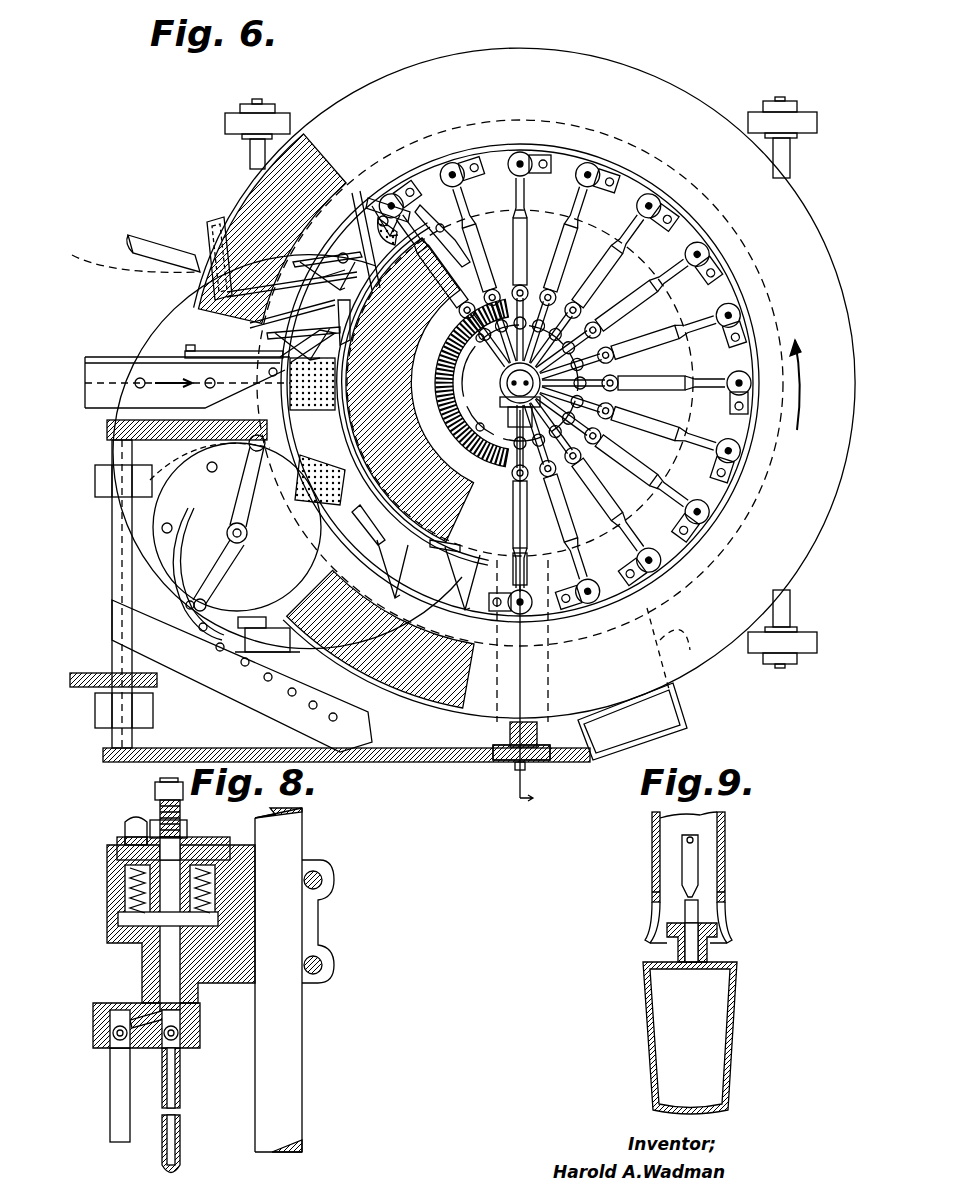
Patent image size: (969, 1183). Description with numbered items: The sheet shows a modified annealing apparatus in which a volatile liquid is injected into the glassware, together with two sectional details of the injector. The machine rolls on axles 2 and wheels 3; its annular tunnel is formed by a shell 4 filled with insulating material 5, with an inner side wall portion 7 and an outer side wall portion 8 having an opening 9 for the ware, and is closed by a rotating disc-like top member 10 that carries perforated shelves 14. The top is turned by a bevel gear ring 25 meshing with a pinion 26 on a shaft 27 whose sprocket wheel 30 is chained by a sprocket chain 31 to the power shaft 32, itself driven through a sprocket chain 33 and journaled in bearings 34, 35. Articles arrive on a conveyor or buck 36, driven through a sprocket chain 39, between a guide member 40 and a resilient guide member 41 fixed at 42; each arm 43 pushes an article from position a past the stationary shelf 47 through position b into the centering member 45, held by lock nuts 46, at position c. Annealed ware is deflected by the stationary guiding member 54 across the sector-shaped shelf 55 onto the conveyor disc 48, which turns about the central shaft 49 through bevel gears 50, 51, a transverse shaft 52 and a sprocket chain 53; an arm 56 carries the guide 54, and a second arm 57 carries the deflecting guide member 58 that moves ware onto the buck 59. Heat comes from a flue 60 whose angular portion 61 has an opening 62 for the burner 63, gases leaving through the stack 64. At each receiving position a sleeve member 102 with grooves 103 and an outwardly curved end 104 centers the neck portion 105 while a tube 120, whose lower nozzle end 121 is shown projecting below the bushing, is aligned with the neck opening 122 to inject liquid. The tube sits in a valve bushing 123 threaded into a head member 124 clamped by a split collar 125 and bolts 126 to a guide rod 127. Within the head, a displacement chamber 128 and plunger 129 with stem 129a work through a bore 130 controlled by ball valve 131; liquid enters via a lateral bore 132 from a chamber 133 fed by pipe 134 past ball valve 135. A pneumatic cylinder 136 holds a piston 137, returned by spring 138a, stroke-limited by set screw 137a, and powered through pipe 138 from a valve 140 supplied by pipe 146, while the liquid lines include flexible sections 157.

In FIG. 6, the axles 2 is at (258, 150).
In FIG. 6, the wheels 3 is at (230, 122).
In FIG. 6, the shell 4 is at (300, 135).
In FIG. 6, the insulating material 5 is at (442, 237).
In FIG. 6, the inner annular side wall portion 7 is at (76, 375).
In FIG. 6, the outer side wall portion 8 is at (618, 592).
In FIG. 6, the opening 9 is at (300, 265).
In FIG. 6, the disc-like top member 10 is at (815, 520).
In FIG. 6, the perforated shelves 14 is at (250, 215).
In FIG. 6, the bevel gear ring 25 is at (520, 383).
In FIG. 6, the beveled pinion 26 is at (514, 455).
In FIG. 6, the shaft 27 is at (527, 763).
In FIG. 6, the sprocket wheel 30 is at (540, 745).
In FIG. 6, the sprocket chain 31 is at (198, 750).
In FIG. 6, the power shaft 32 is at (112, 633).
In FIG. 6, the sprocket chain 33 is at (84, 687).
In FIG. 6, the bearing 34 is at (132, 715).
In FIG. 6, the bearing 35 is at (132, 483).
In FIG. 6, the conveyor or buck 36 is at (108, 357).
In FIG. 6, the sprocket chain 39 is at (112, 425).
In FIG. 6, the guide member 40 is at (150, 360).
In FIG. 6, the guide member 41 is at (185, 325).
In FIG. 6, the securing point 42 is at (192, 351).
In FIG. 6, the arm 43 is at (367, 235).
In FIG. 6, the centering member 45 is at (397, 195).
In FIG. 6, the lock nuts 46 is at (355, 650).
In FIG. 6, the stationary shelf 47 is at (250, 325).
In FIG. 6, the conveyor disc 48 is at (250, 650).
In FIG. 6, the central vertical shaft 49 is at (243, 545).
In FIG. 6, the beveled gear 50 is at (215, 515).
In FIG. 6, the beveled gear 51 is at (200, 500).
In FIG. 6, the transverse shaft 52 is at (195, 486).
In FIG. 6, the sprocket chain 53 is at (96, 485).
In FIG. 6, the stationary guiding member 54 is at (265, 505).
In FIG. 6, the sector-shaped stationary shelf 55 is at (312, 626).
In FIG. 6, the arm 56 is at (250, 448).
In FIG. 6, the second arm 57 is at (215, 560).
In FIG. 6, the deflecting guide member 58 is at (222, 690).
In FIG. 6, the buck or conveyor 59 is at (218, 640).
In FIG. 6, the flue 60 is at (680, 607).
In FIG. 6, the angular flue portion 61 is at (210, 225).
In FIG. 6, the opening 62 is at (136, 256).
In FIG. 6, the burner 63 is at (158, 235).
In FIG. 6, the stack 64 is at (660, 705).
In FIG. 6, the bottle position a is at (265, 368).
In FIG. 6, the article position b is at (227, 293).
In FIG. 6, the article position c is at (342, 252).
In FIG. 9, the sleeve member 102 is at (727, 820).
In FIG. 9, the grooves 103 is at (654, 902).
In FIG. 9, the outwardly curved lower end 104 is at (720, 938).
In FIG. 9, the neck portion 105 is at (655, 945).
In FIG. 8, the tube 120 is at (182, 1083).
In FIG. 9, the tube 120 is at (685, 852).
In FIG. 8, the needle tip 121 is at (178, 1173).
In FIG. 9, the needle tip 121 is at (686, 890).
In FIG. 9, the neck opening 122 is at (700, 915).
In FIG. 8, the valve bushing 123 is at (190, 1052).
In FIG. 6, the head member 124 is at (700, 535).
In FIG. 8, the head member 124 is at (198, 998).
In FIG. 8, the split collar 125 is at (318, 920).
In FIG. 8, the clamping bolts 126 is at (322, 878).
In FIG. 6, the vertical guide rod 127 is at (610, 600).
In FIG. 8, the vertical guide rod 127 is at (280, 1080).
In FIG. 8, the displacement chamber 128 is at (182, 1020).
In FIG. 8, the plunger 129 is at (165, 945).
In FIG. 8, the reduced diameter stem portion 129a is at (170, 1000).
In FIG. 8, the bore 130 is at (190, 1035).
In FIG. 8, the ball valve 131 is at (160, 1080).
In FIG. 8, the lateral bore 132 is at (145, 1015).
In FIG. 8, the chamber 133 is at (105, 1025).
In FIG. 6, the pipe 134 is at (600, 485).
In FIG. 8, the pipe 134 is at (120, 1080).
In FIG. 8, the ball valve 135 is at (107, 1050).
In FIG. 8, the pneumatic cylinder 136 is at (108, 893).
In FIG. 8, the piston 137 is at (195, 845).
In FIG. 8, the adjustable set screw 137a is at (155, 788).
In FIG. 6, the pipe 138 is at (735, 478).
In FIG. 8, the pipe 138 is at (130, 830).
In FIG. 8, the compression spring 138a is at (150, 925).
In FIG. 6, the valve 140 is at (640, 398).
In FIG. 6, the pipe 146 is at (640, 378).
In FIG. 6, the flexible sections 157 is at (595, 500).